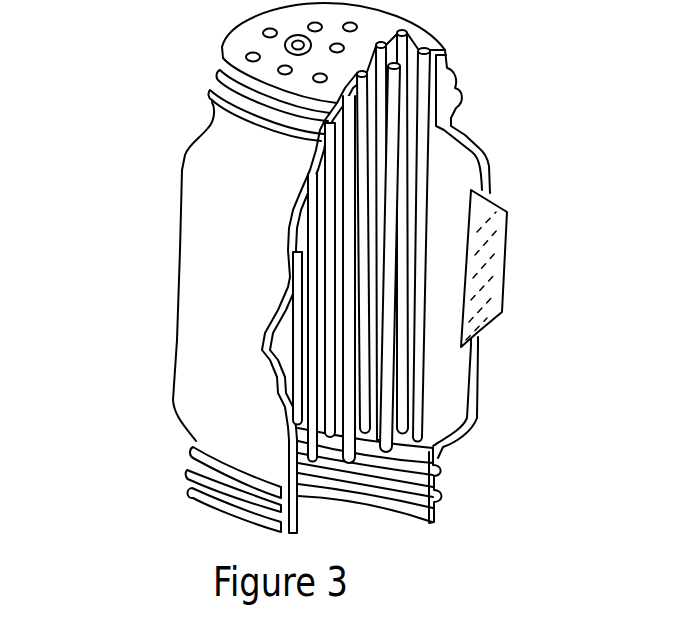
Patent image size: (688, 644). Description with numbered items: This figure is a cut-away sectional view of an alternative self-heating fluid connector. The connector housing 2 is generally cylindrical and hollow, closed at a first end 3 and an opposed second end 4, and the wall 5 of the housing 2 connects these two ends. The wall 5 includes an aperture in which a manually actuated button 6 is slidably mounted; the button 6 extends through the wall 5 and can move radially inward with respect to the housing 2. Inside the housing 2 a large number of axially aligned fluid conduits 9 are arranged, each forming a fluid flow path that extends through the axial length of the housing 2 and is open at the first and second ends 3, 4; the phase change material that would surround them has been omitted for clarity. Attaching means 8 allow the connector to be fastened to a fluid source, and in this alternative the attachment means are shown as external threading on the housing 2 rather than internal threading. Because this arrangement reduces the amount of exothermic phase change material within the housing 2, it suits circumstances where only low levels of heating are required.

The connector housing 2 is at (190, 192).
The first end 3 is at (196, 440).
The second end 4 is at (238, 42).
The wall 5 is at (487, 155).
The manually actuated button 6 is at (484, 289).
The attaching means 8 is at (211, 74).
The fluid conduits 9 is at (422, 79).